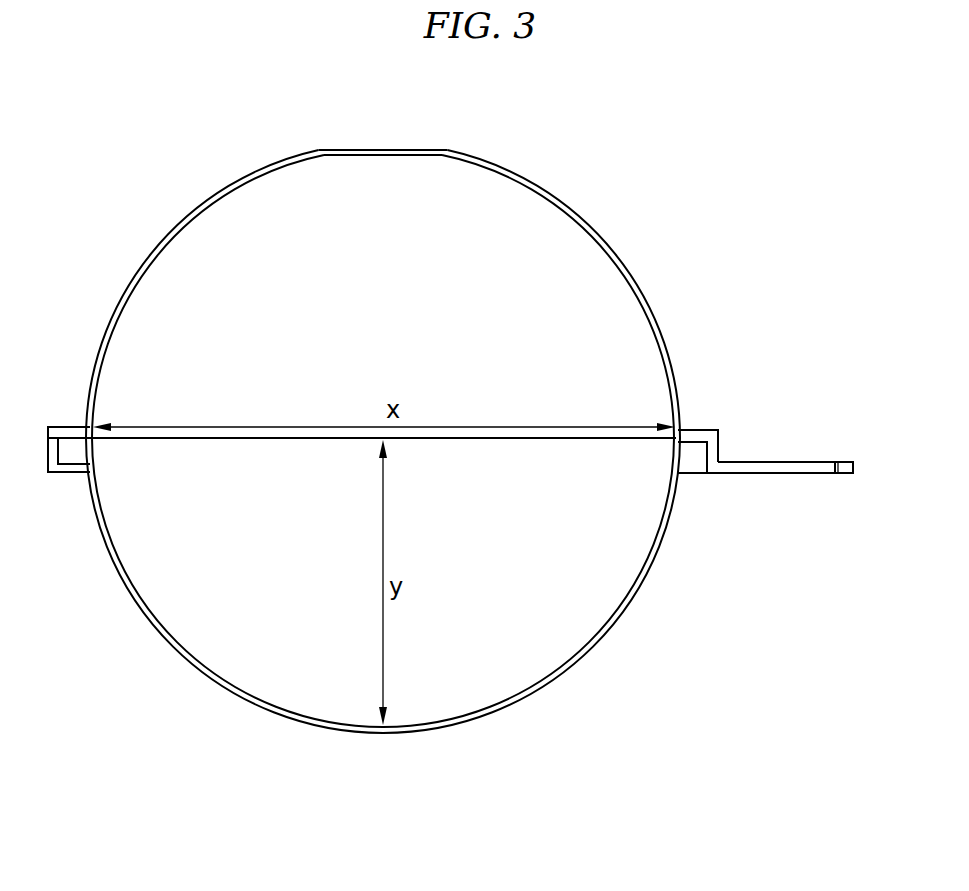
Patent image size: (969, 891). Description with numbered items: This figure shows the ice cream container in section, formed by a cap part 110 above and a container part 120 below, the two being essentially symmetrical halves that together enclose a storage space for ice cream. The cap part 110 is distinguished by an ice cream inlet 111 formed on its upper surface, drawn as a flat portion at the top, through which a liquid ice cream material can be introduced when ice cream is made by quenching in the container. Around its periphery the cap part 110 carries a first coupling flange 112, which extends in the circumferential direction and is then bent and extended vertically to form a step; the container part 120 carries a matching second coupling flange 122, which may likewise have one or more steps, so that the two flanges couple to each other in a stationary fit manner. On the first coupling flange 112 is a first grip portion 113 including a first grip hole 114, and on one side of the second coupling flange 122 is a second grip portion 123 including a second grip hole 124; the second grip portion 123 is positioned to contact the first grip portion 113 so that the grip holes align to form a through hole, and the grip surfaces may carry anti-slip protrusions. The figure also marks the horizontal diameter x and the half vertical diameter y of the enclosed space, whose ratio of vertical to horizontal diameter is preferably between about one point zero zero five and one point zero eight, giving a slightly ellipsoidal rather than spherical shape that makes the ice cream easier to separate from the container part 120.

The cap part 110 is at (606, 245).
The ice cream inlet 111 is at (385, 149).
The first coupling flange 112 is at (703, 430).
The first grip portion 113 is at (875, 432).
The first grip hole 114 is at (793, 462).
The container part 120 is at (642, 589).
The second coupling flange 122 is at (690, 444).
The second grip portion 123 is at (867, 430).
The second grip hole 124 is at (763, 474).